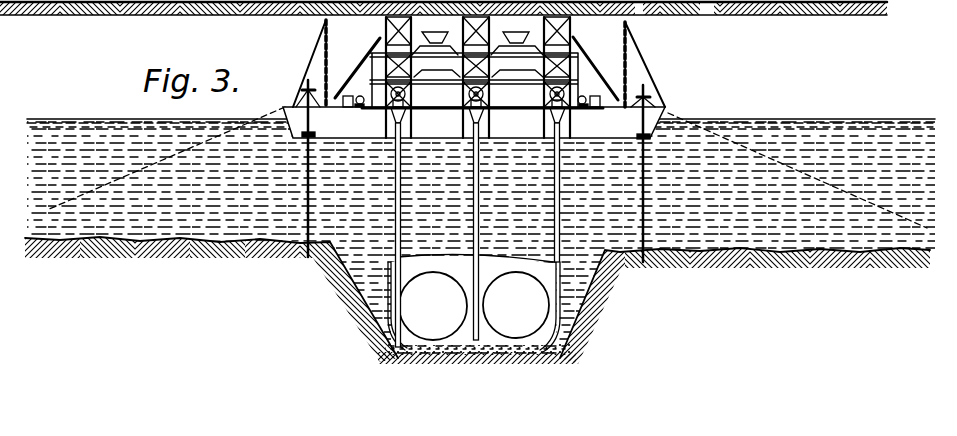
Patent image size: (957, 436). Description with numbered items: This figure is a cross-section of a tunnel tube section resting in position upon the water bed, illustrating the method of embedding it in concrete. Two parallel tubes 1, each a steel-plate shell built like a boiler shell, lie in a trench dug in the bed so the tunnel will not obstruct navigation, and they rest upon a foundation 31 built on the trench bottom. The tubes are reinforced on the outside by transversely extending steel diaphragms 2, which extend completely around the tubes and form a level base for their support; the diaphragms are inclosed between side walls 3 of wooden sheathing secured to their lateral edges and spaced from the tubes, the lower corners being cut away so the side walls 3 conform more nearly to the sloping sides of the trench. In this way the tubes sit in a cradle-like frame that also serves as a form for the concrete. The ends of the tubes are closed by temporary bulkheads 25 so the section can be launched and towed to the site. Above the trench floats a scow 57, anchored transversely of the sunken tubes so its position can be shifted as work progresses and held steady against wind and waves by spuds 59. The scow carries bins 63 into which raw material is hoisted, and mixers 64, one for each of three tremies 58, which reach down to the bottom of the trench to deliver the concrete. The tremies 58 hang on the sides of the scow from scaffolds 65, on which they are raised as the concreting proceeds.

The tube 1 is at (700, 6).
The diaphragm 2 is at (407, 268).
The side wall 3 is at (388, 288).
The temporary bulkhead 25 is at (748, 3).
The foundation 31 is at (217, 8).
The scow 57 is at (727, 107).
The tremie 58 is at (403, 140).
The spud 59 is at (305, 131).
The bin 63 is at (438, 28).
The mixer 64 is at (406, 93).
The scaffold 65 is at (386, 24).